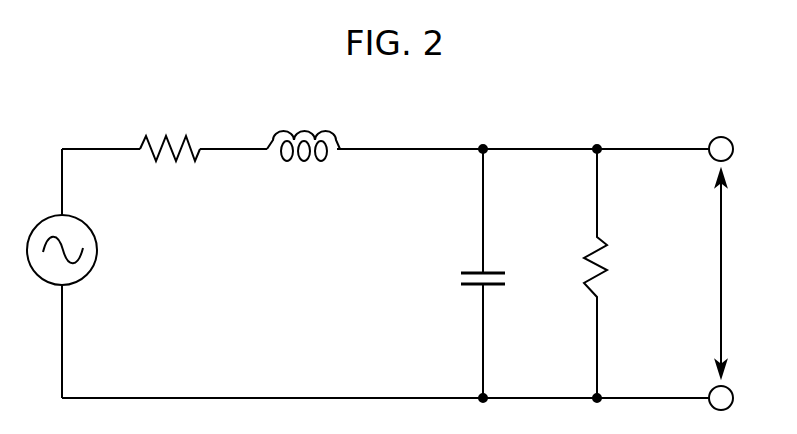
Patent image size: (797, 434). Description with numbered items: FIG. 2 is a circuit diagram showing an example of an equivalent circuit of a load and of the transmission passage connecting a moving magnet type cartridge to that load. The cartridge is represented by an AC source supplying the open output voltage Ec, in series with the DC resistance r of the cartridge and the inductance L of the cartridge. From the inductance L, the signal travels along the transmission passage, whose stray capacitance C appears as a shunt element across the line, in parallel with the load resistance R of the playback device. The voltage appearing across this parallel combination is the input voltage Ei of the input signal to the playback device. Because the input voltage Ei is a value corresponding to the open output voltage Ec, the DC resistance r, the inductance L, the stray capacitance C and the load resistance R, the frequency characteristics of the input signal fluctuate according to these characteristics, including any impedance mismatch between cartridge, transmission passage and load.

The open output voltage Ec is at (79, 250).
The DC resistance r is at (170, 134).
The inductance L is at (303, 134).
The stray capacitance C is at (496, 273).
The load resistance R is at (610, 273).
The input voltage Ei is at (735, 273).